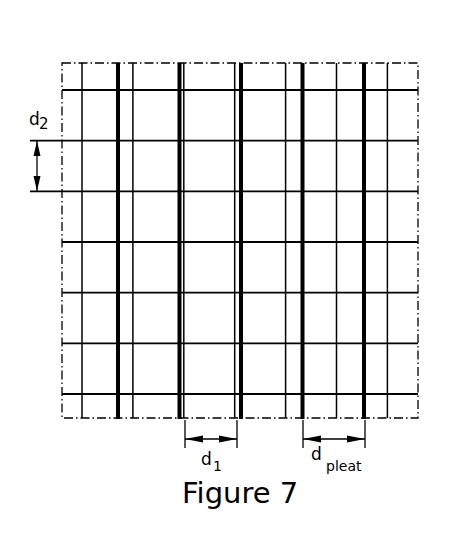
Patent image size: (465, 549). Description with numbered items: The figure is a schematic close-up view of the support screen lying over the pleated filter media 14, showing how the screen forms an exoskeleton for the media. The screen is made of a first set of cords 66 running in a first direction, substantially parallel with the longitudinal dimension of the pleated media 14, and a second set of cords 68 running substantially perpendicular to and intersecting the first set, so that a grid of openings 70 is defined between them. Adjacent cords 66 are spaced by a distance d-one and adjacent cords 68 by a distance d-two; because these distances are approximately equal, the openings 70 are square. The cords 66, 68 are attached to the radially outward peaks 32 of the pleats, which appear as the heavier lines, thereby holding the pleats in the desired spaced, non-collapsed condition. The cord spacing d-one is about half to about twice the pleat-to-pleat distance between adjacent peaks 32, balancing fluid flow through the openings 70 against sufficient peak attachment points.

The filter media 14 is at (207, 80).
The radially outward peaks 32 is at (178, 122).
The first set of cords 66 is at (186, 118).
The second set of cords 68 is at (402, 240).
The openings 70 is at (348, 358).